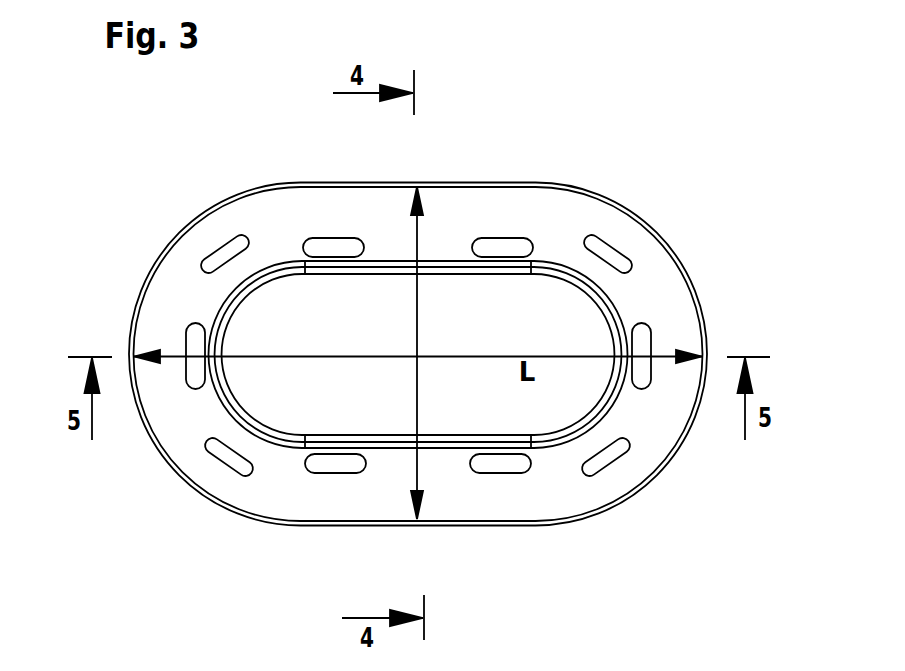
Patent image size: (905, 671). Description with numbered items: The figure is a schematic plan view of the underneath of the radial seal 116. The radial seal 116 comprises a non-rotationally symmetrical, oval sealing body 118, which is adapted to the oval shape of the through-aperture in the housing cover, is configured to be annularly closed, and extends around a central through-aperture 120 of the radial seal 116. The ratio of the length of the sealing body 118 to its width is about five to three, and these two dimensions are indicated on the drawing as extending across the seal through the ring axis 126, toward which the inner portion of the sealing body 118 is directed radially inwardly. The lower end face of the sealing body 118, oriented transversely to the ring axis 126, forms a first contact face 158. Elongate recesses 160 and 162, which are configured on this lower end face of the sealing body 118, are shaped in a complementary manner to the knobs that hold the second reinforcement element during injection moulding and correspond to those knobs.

The radial seal 116 is at (120, 230).
The sealing body 118 is at (272, 216).
The central through-aperture 120 is at (288, 333).
The ring axis 126 is at (417, 401).
The first contact face 158 is at (563, 213).
The elongate recesses 160 is at (214, 250).
The elongate recesses 162 is at (337, 247).